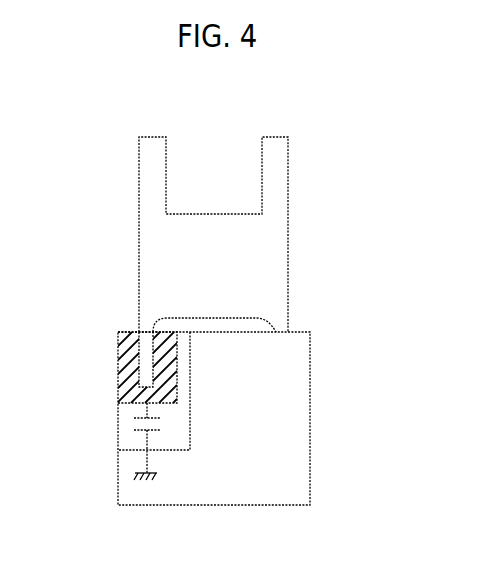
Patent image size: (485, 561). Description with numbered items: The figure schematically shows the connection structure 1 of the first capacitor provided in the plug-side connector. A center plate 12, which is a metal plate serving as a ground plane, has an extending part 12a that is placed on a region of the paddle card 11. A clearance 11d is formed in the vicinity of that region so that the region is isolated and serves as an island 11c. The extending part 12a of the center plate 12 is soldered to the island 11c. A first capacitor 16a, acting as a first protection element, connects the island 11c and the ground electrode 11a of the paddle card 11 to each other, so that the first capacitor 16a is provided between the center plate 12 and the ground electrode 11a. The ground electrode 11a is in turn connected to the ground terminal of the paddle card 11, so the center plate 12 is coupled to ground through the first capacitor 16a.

The semiconductor device 1 is at (392, 136).
The center plate 12 is at (286, 197).
The extending part 12a is at (143, 358).
The paddle card 11 is at (310, 468).
The island 11c is at (123, 358).
The clearance 11d is at (190, 432).
The first capacitor 16a is at (135, 417).
The ground electrode 11a is at (152, 471).